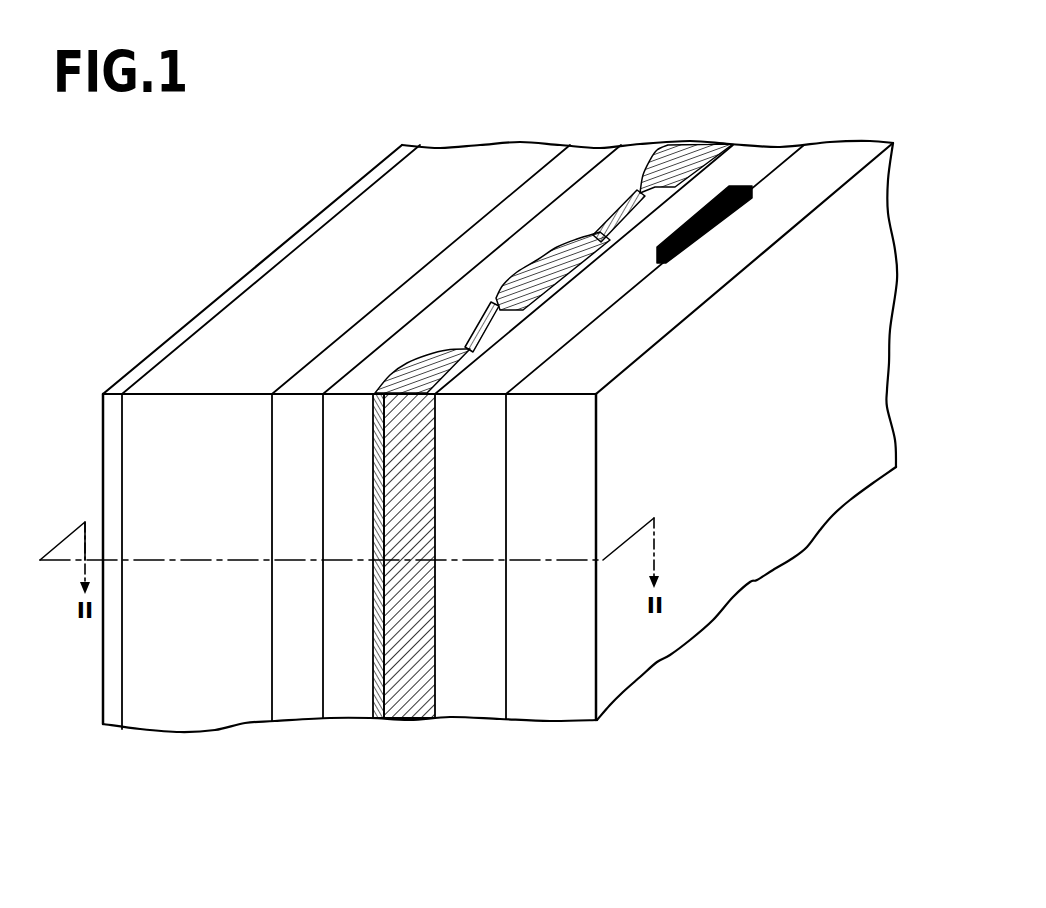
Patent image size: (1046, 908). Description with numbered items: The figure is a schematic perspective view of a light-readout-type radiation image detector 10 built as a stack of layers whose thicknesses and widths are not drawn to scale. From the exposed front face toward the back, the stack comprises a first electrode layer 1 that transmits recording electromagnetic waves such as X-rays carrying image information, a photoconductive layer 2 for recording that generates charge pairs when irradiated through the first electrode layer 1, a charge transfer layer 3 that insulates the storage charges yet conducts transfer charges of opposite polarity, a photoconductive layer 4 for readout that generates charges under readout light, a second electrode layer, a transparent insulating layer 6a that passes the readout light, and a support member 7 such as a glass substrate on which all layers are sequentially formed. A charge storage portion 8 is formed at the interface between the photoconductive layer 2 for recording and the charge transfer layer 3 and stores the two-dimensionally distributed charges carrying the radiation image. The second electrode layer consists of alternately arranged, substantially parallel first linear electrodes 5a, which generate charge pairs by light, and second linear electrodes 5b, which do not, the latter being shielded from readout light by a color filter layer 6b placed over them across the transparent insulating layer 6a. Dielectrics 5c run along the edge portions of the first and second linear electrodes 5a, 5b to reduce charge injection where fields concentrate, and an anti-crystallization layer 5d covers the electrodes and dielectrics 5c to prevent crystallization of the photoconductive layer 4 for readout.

The first electrode layer 1 is at (112, 717).
The photoconductive layer for recording 2 is at (190, 717).
The charge transfer layer 3 is at (297, 717).
The photoconductive layer for readout 4 is at (369, 707).
The first linear electrodes 5a is at (483, 296).
The second linear electrodes 5b is at (631, 224).
The dielectrics 5c is at (420, 355).
The anti-crystallization layer 5d is at (626, 214).
The transparent insulating layer 6a is at (466, 705).
The color filter layer 6b is at (712, 225).
The support member 7 is at (537, 705).
The charge storage portion 8 is at (264, 703).
The radiation image detector 10 is at (628, 99).